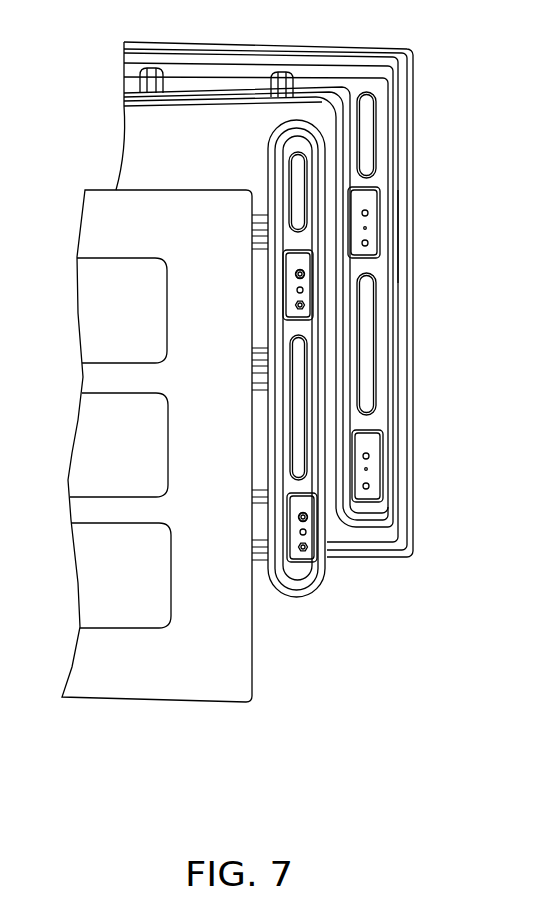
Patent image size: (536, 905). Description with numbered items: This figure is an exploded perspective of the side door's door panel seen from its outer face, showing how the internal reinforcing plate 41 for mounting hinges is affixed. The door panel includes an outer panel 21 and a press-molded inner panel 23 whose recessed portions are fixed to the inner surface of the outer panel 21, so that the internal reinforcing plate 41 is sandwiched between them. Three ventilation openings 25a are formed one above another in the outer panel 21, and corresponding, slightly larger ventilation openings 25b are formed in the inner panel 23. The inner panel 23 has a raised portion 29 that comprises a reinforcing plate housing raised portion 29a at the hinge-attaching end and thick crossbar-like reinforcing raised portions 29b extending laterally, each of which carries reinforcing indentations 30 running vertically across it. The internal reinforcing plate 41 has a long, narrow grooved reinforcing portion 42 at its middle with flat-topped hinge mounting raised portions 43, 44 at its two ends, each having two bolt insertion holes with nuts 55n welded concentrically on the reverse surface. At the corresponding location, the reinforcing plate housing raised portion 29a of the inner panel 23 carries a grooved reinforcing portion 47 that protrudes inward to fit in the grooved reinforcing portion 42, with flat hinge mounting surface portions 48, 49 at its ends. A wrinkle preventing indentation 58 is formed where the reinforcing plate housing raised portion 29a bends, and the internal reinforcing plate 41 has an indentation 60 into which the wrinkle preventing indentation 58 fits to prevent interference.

The outer panel 21 is at (103, 200).
The inner panel 23 is at (155, 41).
The ventilation openings 25a is at (92, 270).
The ventilation openings 25b is at (137, 123).
The raised portion 29 is at (325, 70).
The reinforcing plate housing raised portion 29a is at (388, 317).
The reinforcing raised portions 29b is at (198, 80).
The reinforcing indentations 30 is at (281, 80).
The internal reinforcing plate 41 is at (312, 122).
The grooved reinforcing portion 42 is at (298, 408).
The hinge mounting raised portion 43 is at (300, 270).
The hinge mounting raised portion 44 is at (313, 555).
The grooved reinforcing portion 47 is at (372, 368).
The hinge mounting surface portion 48 is at (372, 201).
The hinge mounting surface portion 49 is at (382, 492).
The nuts 55n is at (308, 302).
The wrinkle preventing indentation 58 is at (365, 123).
The indentation 60 is at (300, 183).